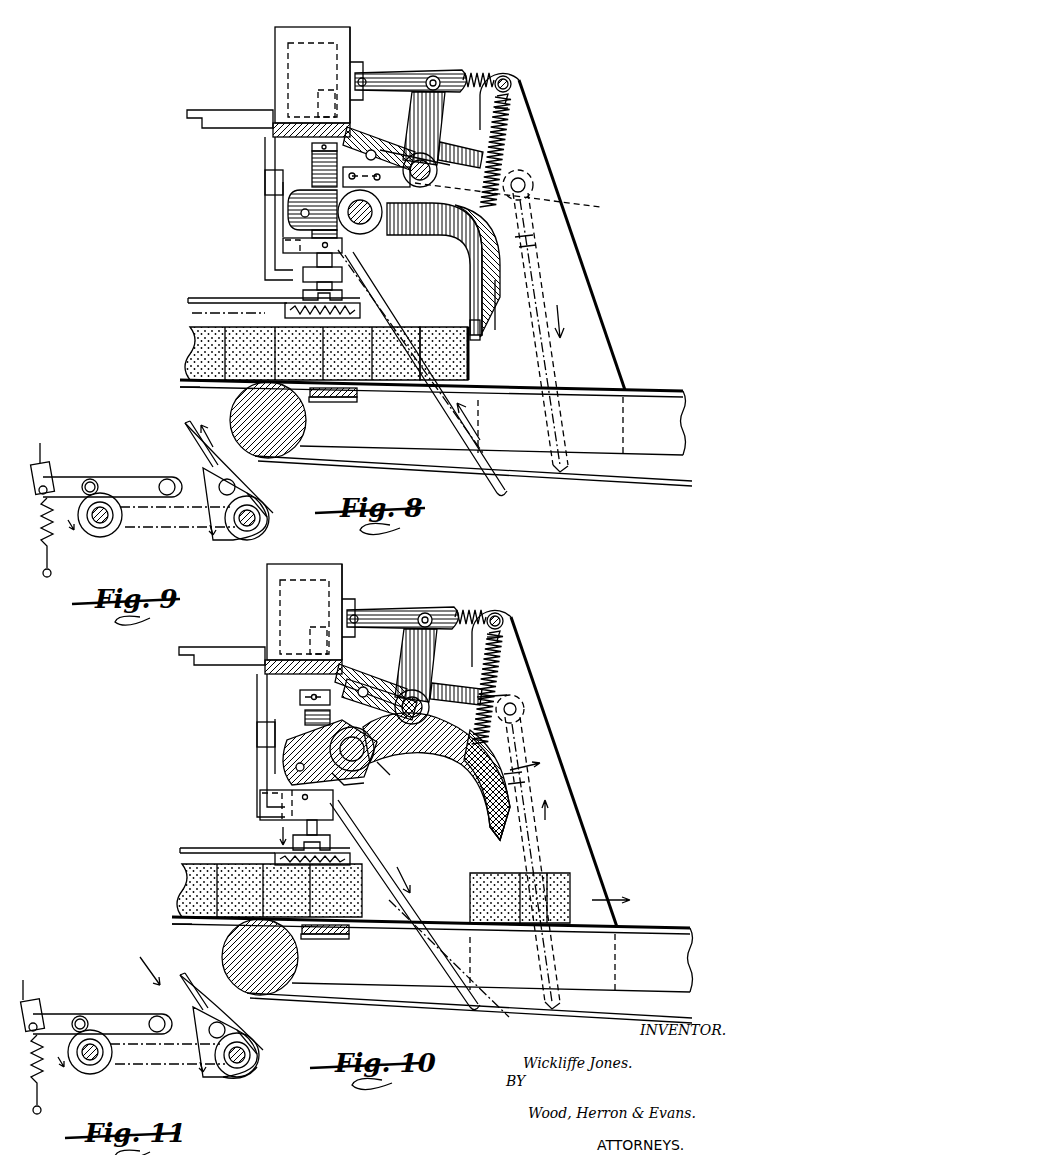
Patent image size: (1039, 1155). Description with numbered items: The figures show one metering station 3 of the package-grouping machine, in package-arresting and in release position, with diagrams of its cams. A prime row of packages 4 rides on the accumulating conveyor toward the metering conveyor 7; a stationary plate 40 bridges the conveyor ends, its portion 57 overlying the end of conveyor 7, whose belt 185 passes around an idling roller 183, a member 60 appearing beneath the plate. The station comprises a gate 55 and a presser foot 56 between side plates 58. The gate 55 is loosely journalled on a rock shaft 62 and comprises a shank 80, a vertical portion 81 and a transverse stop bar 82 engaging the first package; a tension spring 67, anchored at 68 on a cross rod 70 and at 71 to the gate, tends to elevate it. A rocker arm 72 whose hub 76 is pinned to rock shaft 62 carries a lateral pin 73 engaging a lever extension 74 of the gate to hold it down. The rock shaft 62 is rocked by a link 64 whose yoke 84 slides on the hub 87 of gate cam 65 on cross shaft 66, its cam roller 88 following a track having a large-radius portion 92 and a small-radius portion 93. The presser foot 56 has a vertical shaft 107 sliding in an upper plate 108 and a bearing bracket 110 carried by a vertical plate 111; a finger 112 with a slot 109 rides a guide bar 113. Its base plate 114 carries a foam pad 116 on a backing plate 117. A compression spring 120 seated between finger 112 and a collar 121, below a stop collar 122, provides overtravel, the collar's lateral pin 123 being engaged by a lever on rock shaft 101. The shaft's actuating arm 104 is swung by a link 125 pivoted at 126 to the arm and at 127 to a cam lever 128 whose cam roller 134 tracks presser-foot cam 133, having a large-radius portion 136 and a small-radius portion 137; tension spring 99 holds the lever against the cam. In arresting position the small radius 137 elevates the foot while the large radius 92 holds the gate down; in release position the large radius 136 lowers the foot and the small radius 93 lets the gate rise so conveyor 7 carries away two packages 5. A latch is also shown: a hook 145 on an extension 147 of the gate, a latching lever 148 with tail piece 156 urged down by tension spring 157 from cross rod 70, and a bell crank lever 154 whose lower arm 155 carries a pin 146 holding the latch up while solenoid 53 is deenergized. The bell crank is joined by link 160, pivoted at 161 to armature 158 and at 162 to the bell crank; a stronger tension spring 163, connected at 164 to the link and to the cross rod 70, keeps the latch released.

In FIG. 8, the cutting head assembly 3 is at (372, 50).
In FIG. 10, the cutting head assembly 3 is at (361, 611).
In FIG. 8, the packages 4 is at (190, 340).
In FIG. 10, the packages 4 is at (254, 890).
In FIG. 8, the packages 5 is at (450, 336).
In FIG. 10, the packages 5 is at (523, 887).
In FIG. 8, the metering conveyor 7 is at (657, 375).
In FIG. 10, the metering conveyor 7 is at (432, 938).
In FIG. 8, the stationary plate 40 is at (215, 380).
In FIG. 10, the stationary plate 40 is at (190, 931).
In FIG. 8, the solenoid 53 is at (328, 32).
In FIG. 10, the solenoid 53 is at (304, 604).
In FIG. 8, the gate 55 is at (500, 278).
In FIG. 10, the gate 55 is at (506, 859).
In FIG. 8, the presser foot 56 is at (251, 288).
In FIG. 10, the presser foot 56 is at (265, 836).
In FIG. 8, the portion of stationary plate 57 is at (355, 384).
In FIG. 10, the portion of stationary plate 57 is at (344, 919).
In FIG. 8, the side plates 58 is at (582, 288).
In FIG. 10, the side plates 58 is at (564, 772).
In FIG. 8, the support 60 is at (350, 402).
In FIG. 10, the support 60 is at (325, 952).
In FIG. 8, the rock shaft 62 is at (368, 222).
In FIG. 10, the rock shaft 62 is at (356, 756).
In FIG. 8, the link 64 is at (456, 436).
In FIG. 9, the link 64 is at (182, 433).
In FIG. 10, the link 64 is at (419, 908).
In FIG. 11, the link 64 is at (177, 964).
In FIG. 9, the gate actuating cam 65 is at (281, 504).
In FIG. 11, the gate actuating cam 65 is at (271, 1056).
In FIG. 9, the cross shaft 66 is at (108, 528).
In FIG. 11, the cross shaft 66 is at (196, 1060).
In FIG. 8, the tension spring 67 is at (505, 130).
In FIG. 10, the tension spring 67 is at (514, 689).
In FIG. 8, the anchor 68 is at (508, 98).
In FIG. 10, the anchor 68 is at (522, 637).
In FIG. 8, the cross rod 70 is at (512, 84).
In FIG. 10, the cross rod 70 is at (518, 618).
In FIG. 8, the anchor 71 is at (492, 238).
In FIG. 10, the anchor 71 is at (479, 785).
In FIG. 8, the rocker arm 72 is at (293, 196).
In FIG. 10, the rocker arm 72 is at (330, 759).
In FIG. 8, the lateral pin 73 is at (301, 214).
In FIG. 10, the lateral pin 73 is at (266, 774).
In FIG. 8, the lever extension 74 is at (284, 190).
In FIG. 10, the lever extension 74 is at (254, 746).
In FIG. 8, the hub 76 is at (358, 238).
In FIG. 8, the shank 80 is at (455, 225).
In FIG. 10, the shank 80 is at (436, 776).
In FIG. 8, the vertical portion 81 is at (495, 300).
In FIG. 10, the vertical portion 81 is at (531, 777).
In FIG. 8, the stop bar 82 is at (476, 340).
In FIG. 10, the stop bar 82 is at (490, 844).
In FIG. 9, the yoke 84 is at (203, 472).
In FIG. 11, the yoke 84 is at (180, 991).
In FIG. 11, the hub 87 is at (254, 1086).
In FIG. 9, the cam roller 88 is at (225, 462).
In FIG. 11, the cam roller 88 is at (221, 1026).
In FIG. 9, the large radius portion 92 is at (235, 487).
In FIG. 11, the small radius portion 93 is at (233, 1017).
In FIG. 9, the tension spring 99 is at (45, 560).
In FIG. 11, the tension spring 99 is at (40, 1074).
In FIG. 8, the rock shaft 101 is at (438, 176).
In FIG. 10, the rock shaft 101 is at (431, 707).
In FIG. 8, the actuating arm 104 is at (548, 170).
In FIG. 8, the vertical shaft 107 is at (318, 102).
In FIG. 10, the vertical shaft 107 is at (336, 835).
In FIG. 8, the upper plate 108 is at (270, 120).
In FIG. 10, the upper plate 108 is at (222, 647).
In FIG. 8, the slot 109 is at (285, 266).
In FIG. 8, the lower bearing bracket 110 is at (345, 283).
In FIG. 8, the vertical plate 111 is at (265, 236).
In FIG. 10, the vertical plate 111 is at (247, 745).
In FIG. 10, the finger 112 is at (275, 805).
In FIG. 8, the guide bar 113 is at (268, 178).
In FIG. 10, the guide bar 113 is at (244, 733).
In FIG. 8, the base plate 114 is at (196, 288).
In FIG. 10, the base plate 114 is at (178, 837).
In FIG. 8, the pad 116 is at (192, 313).
In FIG. 10, the backing plate 117 is at (337, 855).
In FIG. 10, the compression spring 120 is at (360, 793).
In FIG. 8, the collar 121 is at (312, 165).
In FIG. 10, the stop collar 122 is at (303, 650).
In FIG. 8, the lateral pin 123 is at (312, 152).
In FIG. 8, the link 125 is at (570, 413).
In FIG. 9, the link 125 is at (56, 439).
In FIG. 10, the link 125 is at (581, 1000).
In FIG. 11, the link 125 is at (28, 974).
In FIG. 8, the pivot connection 126 is at (545, 205).
In FIG. 10, the pivot connection 126 is at (537, 709).
In FIG. 9, the pivot connection 127 is at (40, 492).
In FIG. 9, the cam lever 128 is at (135, 478).
In FIG. 11, the cam lever 128 is at (96, 1025).
In FIG. 9, the presser foot cam 133 is at (87, 546).
In FIG. 11, the presser foot cam 133 is at (87, 1071).
In FIG. 9, the cam roller 134 is at (82, 480).
In FIG. 11, the cam roller 134 is at (68, 1010).
In FIG. 11, the large radius portion 136 is at (93, 1005).
In FIG. 9, the small radius portion 137 is at (94, 480).
In FIG. 8, the hook 145 is at (410, 182).
In FIG. 10, the hook 145 is at (296, 711).
In FIG. 8, the lateral pin 146 is at (372, 150).
In FIG. 10, the lateral pin 146 is at (379, 686).
In FIG. 10, the extension 147 is at (396, 785).
In FIG. 8, the latching lever 148 is at (365, 130).
In FIG. 10, the latching lever 148 is at (371, 674).
In FIG. 8, the bell crank lever 154 is at (446, 106).
In FIG. 10, the bell crank lever 154 is at (432, 665).
In FIG. 8, the lower arm 155 is at (390, 140).
In FIG. 10, the lower arm 155 is at (456, 683).
In FIG. 8, the tail piece 156 is at (466, 150).
In FIG. 10, the tail piece 156 is at (534, 684).
In FIG. 8, the tension spring 157 is at (500, 112).
In FIG. 10, the tension spring 157 is at (471, 640).
In FIG. 8, the armature 158 is at (364, 66).
In FIG. 10, the armature 158 is at (368, 610).
In FIG. 8, the link 160 is at (418, 72).
In FIG. 10, the link 160 is at (403, 599).
In FIG. 8, the pivot connection 161 is at (358, 82).
In FIG. 10, the pivot connection 161 is at (328, 613).
In FIG. 8, the pivot connection 162 is at (437, 78).
In FIG. 10, the pivot connection 162 is at (429, 608).
In FIG. 8, the tension spring 163 is at (508, 62).
In FIG. 10, the tension spring 163 is at (487, 624).
In FIG. 8, the connection 164 is at (470, 78).
In FIG. 10, the connection 164 is at (467, 592).
In FIG. 8, the idling roller 183 is at (298, 436).
In FIG. 10, the idling roller 183 is at (282, 957).
In FIG. 8, the conveyor belt 185 is at (584, 474).
In FIG. 10, the conveyor belt 185 is at (469, 977).